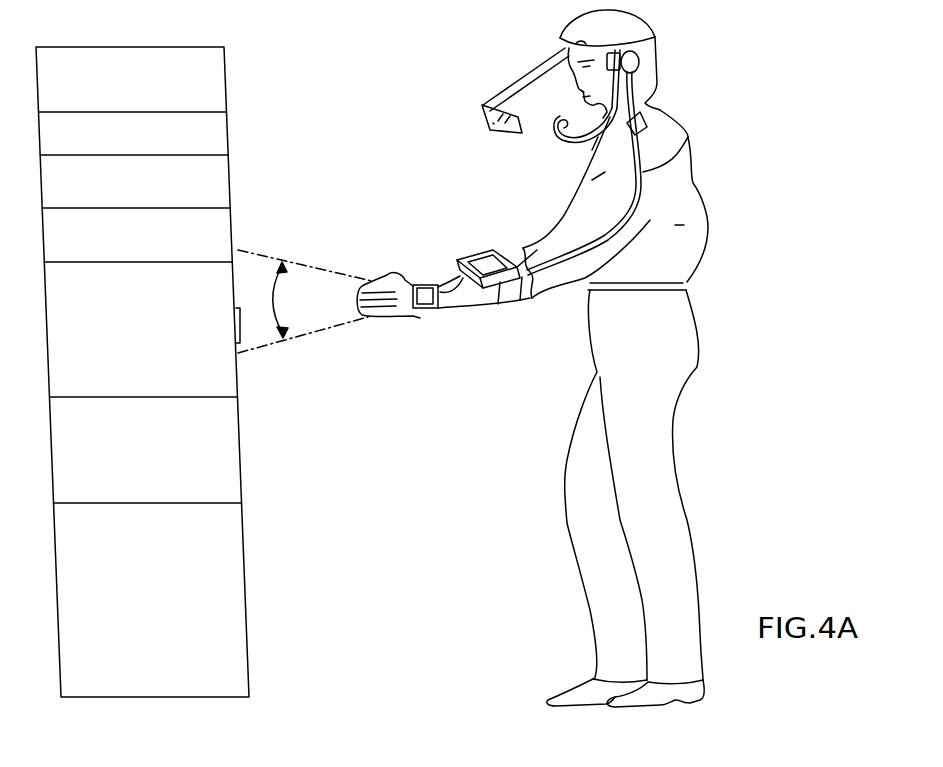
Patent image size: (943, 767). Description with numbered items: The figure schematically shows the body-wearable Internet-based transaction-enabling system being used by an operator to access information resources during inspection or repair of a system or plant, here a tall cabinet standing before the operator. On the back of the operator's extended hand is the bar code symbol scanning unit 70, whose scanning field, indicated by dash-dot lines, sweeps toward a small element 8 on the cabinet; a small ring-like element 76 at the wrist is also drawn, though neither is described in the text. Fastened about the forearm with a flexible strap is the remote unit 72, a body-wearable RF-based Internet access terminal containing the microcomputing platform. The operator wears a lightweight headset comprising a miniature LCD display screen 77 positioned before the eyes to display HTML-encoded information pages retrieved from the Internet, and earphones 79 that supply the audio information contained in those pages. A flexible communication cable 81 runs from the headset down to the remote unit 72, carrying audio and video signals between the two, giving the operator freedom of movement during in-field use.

The miniature LCD display screen 77 is at (221, 86).
The target indicia 8 is at (242, 330).
The earphones 79 is at (646, 50).
The flexible communication cable 81 is at (682, 138).
The remote unit 72 is at (478, 253).
The wrist ring 76 is at (448, 282).
The bar code symbol scanning unit 70 is at (409, 313).